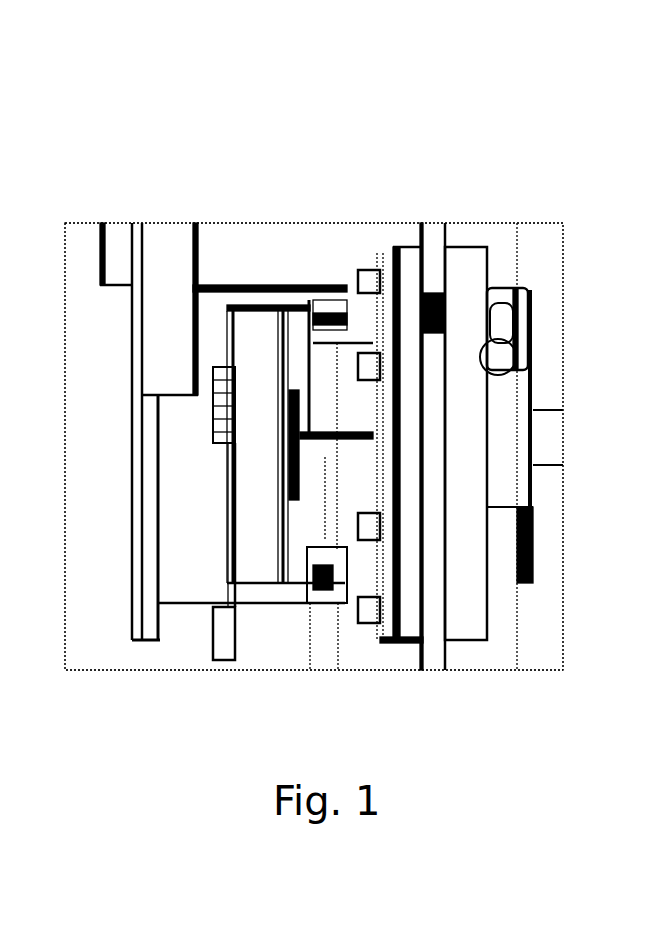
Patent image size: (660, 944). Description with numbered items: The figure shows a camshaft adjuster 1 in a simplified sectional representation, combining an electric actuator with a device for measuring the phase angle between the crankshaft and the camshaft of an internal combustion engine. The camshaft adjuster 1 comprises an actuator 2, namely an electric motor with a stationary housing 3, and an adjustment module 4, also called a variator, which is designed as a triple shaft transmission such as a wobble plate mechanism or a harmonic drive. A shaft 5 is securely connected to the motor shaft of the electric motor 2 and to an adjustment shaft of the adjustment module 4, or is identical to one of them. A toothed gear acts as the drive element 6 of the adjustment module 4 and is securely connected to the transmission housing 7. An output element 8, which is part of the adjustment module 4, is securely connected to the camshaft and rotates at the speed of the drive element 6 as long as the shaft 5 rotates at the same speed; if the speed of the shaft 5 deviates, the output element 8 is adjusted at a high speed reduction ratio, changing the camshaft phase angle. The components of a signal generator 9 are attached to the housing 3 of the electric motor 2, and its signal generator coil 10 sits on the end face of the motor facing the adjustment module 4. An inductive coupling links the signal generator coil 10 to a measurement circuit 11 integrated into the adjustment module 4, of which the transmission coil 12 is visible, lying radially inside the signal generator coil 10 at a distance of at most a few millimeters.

The camshaft adjuster 1 is at (390, 140).
The actuator 2 is at (190, 165).
The housing 3 is at (193, 603).
The adjustment module 4 is at (437, 178).
The shaft 5 is at (290, 352).
The drive element 6 is at (450, 226).
The transmission housing 7 is at (480, 245).
The output element 8 is at (540, 378).
The signal generator 9 is at (320, 310).
The signal generator coil 10 is at (331, 248).
The measurement circuit 11 is at (297, 600).
The transmission coil 12 is at (280, 639).